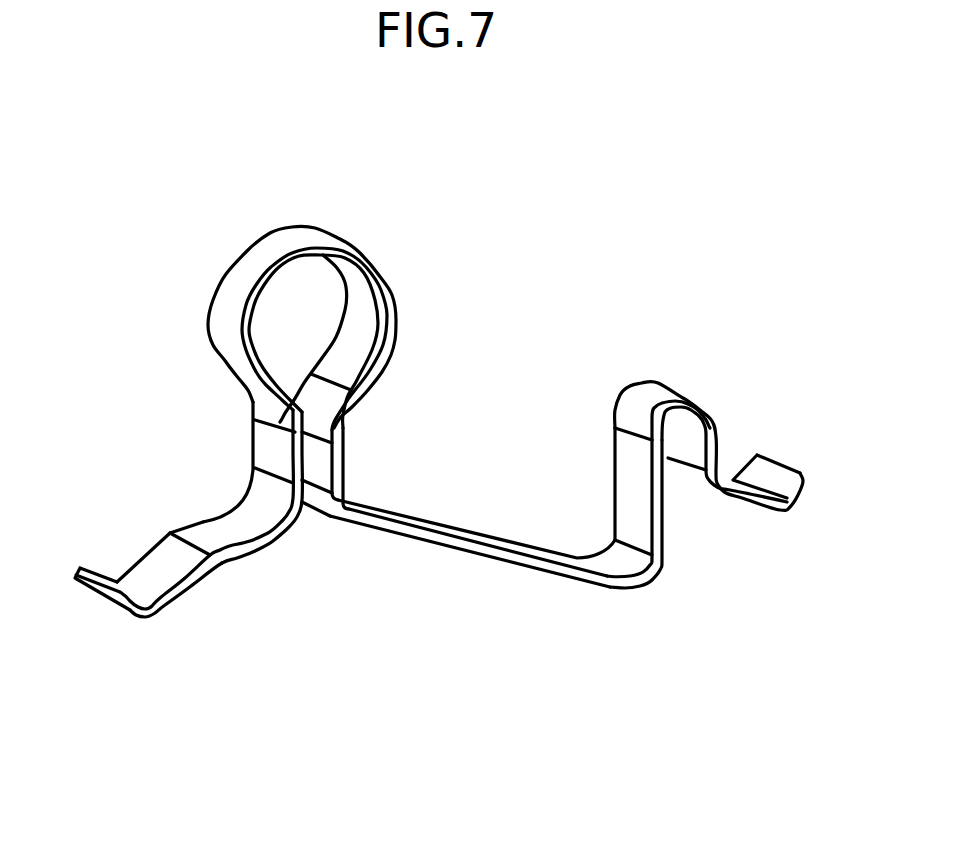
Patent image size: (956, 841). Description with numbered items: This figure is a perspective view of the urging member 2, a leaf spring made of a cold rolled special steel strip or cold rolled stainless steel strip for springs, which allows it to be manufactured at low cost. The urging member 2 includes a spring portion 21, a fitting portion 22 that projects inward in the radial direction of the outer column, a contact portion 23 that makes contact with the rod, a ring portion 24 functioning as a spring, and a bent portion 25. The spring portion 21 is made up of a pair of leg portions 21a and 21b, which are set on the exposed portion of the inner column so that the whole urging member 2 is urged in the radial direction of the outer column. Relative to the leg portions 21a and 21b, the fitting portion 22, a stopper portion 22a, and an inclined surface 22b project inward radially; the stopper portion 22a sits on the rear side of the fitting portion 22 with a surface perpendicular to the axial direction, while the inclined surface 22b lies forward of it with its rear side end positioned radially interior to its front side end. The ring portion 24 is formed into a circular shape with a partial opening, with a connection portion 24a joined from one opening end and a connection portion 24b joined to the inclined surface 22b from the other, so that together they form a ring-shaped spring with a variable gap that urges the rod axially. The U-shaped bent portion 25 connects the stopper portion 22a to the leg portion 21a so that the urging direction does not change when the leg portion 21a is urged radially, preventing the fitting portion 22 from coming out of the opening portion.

The urging member 2 is at (353, 188).
The spring portion 21 is at (555, 742).
The leg portion 21a is at (767, 600).
The leg portion 21b is at (145, 620).
The fitting portion 22 is at (627, 583).
The stopper portion 22a is at (662, 533).
The inclined surface 22b is at (447, 545).
The contact portion 23 is at (250, 525).
The ring portion 24 is at (253, 262).
The connection portion 24a is at (275, 448).
The connection portion 24b is at (340, 453).
The bent portion 25 is at (650, 400).